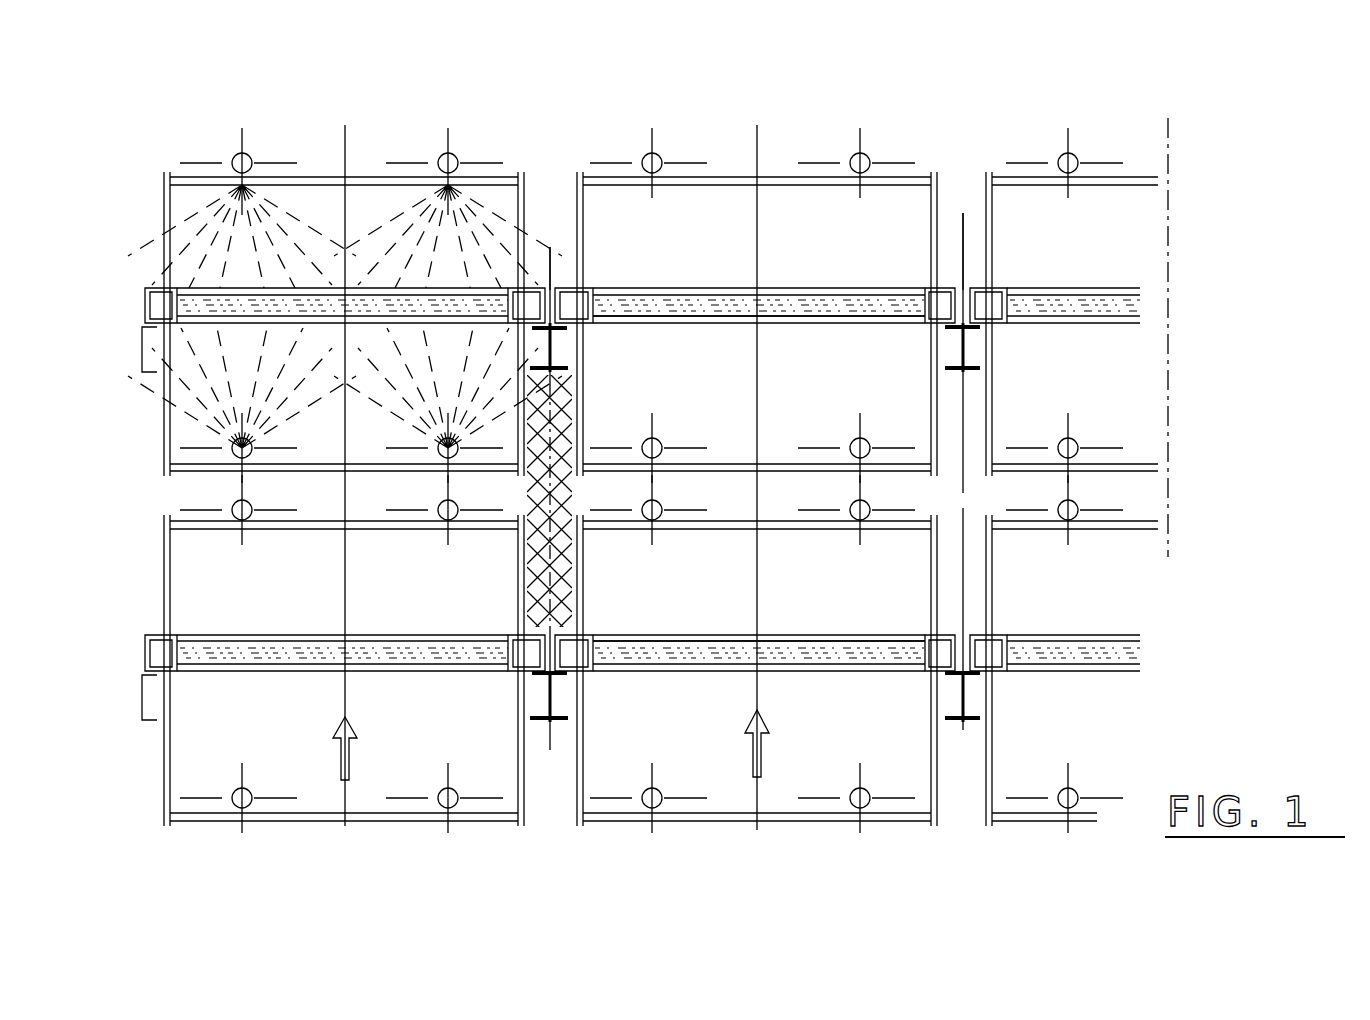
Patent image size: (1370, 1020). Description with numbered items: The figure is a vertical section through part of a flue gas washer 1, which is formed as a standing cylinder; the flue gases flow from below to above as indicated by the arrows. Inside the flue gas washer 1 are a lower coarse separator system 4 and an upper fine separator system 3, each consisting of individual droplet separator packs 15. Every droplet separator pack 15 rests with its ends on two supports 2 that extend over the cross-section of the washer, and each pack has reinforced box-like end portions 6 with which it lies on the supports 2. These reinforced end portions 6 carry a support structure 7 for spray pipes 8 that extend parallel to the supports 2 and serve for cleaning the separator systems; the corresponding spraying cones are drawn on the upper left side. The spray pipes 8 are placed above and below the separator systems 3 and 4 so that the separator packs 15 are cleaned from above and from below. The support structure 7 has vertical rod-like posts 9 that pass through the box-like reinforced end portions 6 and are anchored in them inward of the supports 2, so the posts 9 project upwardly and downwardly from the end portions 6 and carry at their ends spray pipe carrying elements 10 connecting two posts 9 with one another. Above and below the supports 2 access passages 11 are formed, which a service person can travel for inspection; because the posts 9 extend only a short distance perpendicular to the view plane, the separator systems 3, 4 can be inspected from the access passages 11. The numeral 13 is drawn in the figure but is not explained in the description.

The flue gas washer 1 is at (1155, 370).
The support 2 is at (552, 370).
The upper fine separator system 3 is at (697, 290).
The lower coarse separator system 4 is at (252, 653).
The reinforced box-like end portion 6 is at (928, 322).
The support structure 7 is at (610, 183).
The spray pipe 8 is at (1068, 448).
The rod-like post 9 is at (935, 240).
The spray pipe carrying element 10 is at (716, 178).
The access passage 11 is at (947, 210).
The upper bar surface 13 is at (733, 322).
The droplet separator pack 15 is at (722, 643).